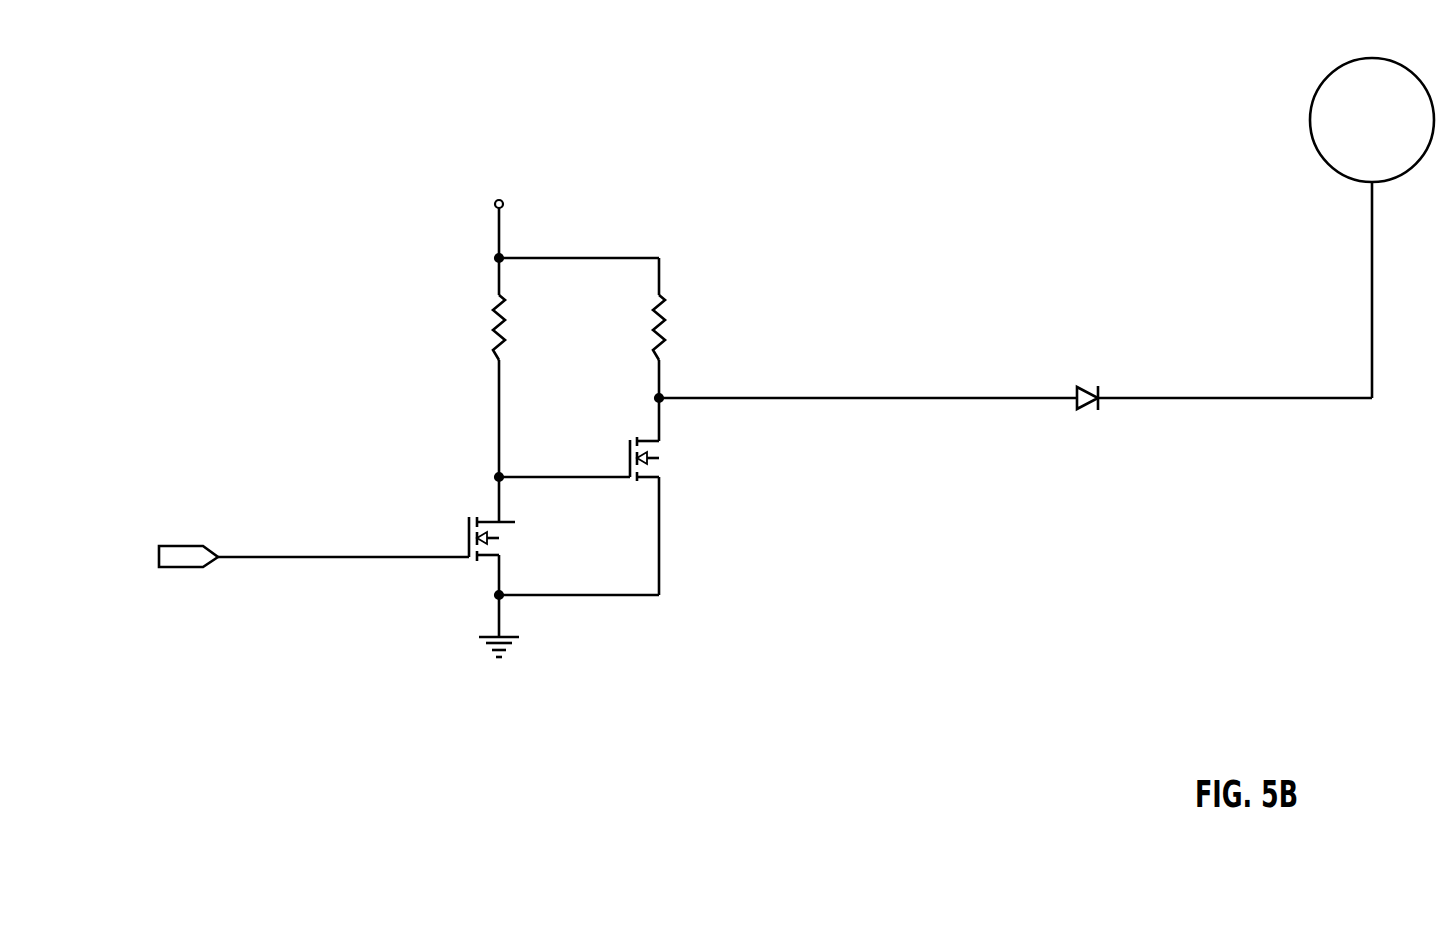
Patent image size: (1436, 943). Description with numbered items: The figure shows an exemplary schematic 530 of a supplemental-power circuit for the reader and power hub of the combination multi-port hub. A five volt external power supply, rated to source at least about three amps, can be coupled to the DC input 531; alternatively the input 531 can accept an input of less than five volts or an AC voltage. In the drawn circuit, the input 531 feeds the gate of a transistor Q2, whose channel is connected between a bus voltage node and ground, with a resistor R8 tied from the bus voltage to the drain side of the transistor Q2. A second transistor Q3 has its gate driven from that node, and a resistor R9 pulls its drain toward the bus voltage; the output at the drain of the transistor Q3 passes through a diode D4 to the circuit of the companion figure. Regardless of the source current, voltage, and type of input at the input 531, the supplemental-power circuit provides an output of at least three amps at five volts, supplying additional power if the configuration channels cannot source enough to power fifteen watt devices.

The schematic 530 is at (216, 66).
The input 531 is at (182, 545).
The resistor R8 is at (520, 327).
The resistor R9 is at (680, 327).
The transistor Q2 is at (470, 539).
The transistor Q3 is at (623, 453).
The diode D4 is at (1087, 379).